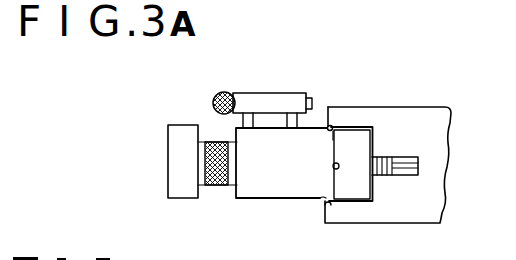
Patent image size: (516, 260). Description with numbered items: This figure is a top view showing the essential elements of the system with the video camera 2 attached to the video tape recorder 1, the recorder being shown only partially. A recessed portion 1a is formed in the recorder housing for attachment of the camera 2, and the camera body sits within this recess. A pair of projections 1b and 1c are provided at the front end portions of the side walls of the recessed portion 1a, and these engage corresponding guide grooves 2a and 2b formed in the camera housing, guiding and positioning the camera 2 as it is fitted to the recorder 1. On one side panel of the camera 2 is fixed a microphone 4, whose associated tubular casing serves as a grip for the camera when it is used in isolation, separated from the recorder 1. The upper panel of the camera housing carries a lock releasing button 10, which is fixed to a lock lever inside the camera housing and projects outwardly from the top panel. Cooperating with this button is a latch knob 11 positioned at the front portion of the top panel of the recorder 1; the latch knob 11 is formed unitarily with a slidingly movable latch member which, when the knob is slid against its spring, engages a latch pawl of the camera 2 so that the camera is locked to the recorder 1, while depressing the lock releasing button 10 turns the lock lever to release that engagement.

The video tape recorder 1 is at (438, 133).
The recessed portion 1a is at (377, 134).
The projection 1b is at (330, 125).
The projection 1c is at (329, 207).
The video camera 2 is at (230, 197).
The guide groove 2a is at (334, 136).
The guide groove 2b is at (318, 200).
The microphone 4 is at (253, 88).
The lock releasing button 10 is at (338, 170).
The latch knob 11 is at (390, 176).